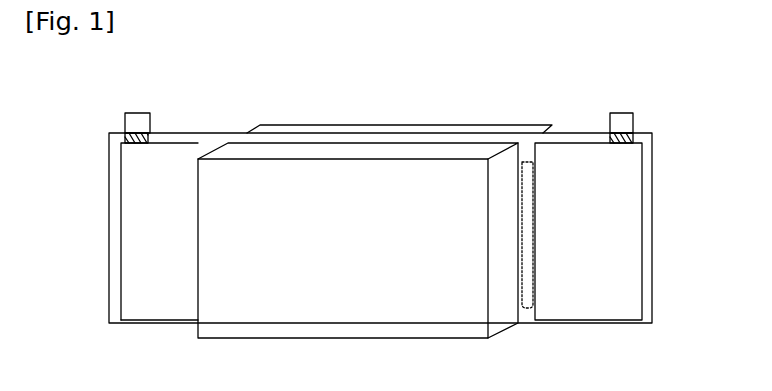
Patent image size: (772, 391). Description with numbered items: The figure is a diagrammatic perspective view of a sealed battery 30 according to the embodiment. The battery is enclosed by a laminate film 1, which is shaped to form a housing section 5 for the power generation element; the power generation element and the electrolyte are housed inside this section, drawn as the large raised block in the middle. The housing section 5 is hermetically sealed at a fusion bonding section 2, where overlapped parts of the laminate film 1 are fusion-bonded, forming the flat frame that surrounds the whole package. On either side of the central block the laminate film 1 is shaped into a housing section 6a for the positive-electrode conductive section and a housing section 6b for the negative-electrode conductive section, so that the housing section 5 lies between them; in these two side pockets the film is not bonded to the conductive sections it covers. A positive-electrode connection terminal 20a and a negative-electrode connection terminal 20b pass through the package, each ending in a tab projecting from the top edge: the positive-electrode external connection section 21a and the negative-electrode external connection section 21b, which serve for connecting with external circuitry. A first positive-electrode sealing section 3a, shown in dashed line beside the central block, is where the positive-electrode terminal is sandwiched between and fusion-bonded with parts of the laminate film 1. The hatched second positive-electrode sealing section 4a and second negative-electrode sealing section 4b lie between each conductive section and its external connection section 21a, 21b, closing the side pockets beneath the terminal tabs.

The laminate film 1 is at (387, 213).
The sealed battery 30 is at (387, 213).
The fusion bonding section 2 is at (117, 235).
The housing section for power generation element 5 is at (353, 315).
The housing section for positive-electrode conductive section 6a is at (597, 198).
The housing section for negative-electrode conductive section 6b is at (153, 200).
The first positive-electrode sealing section 3a is at (527, 258).
The second positive-electrode sealing section 4a is at (635, 137).
The second negative-electrode sealing section 4b is at (148, 137).
The positive-electrode external connection section 21a is at (622, 122).
The positive-electrode connection terminal 20a is at (655, 101).
The negative-electrode external connection section 21b is at (137, 123).
The negative-electrode connection terminal 20b is at (164, 103).